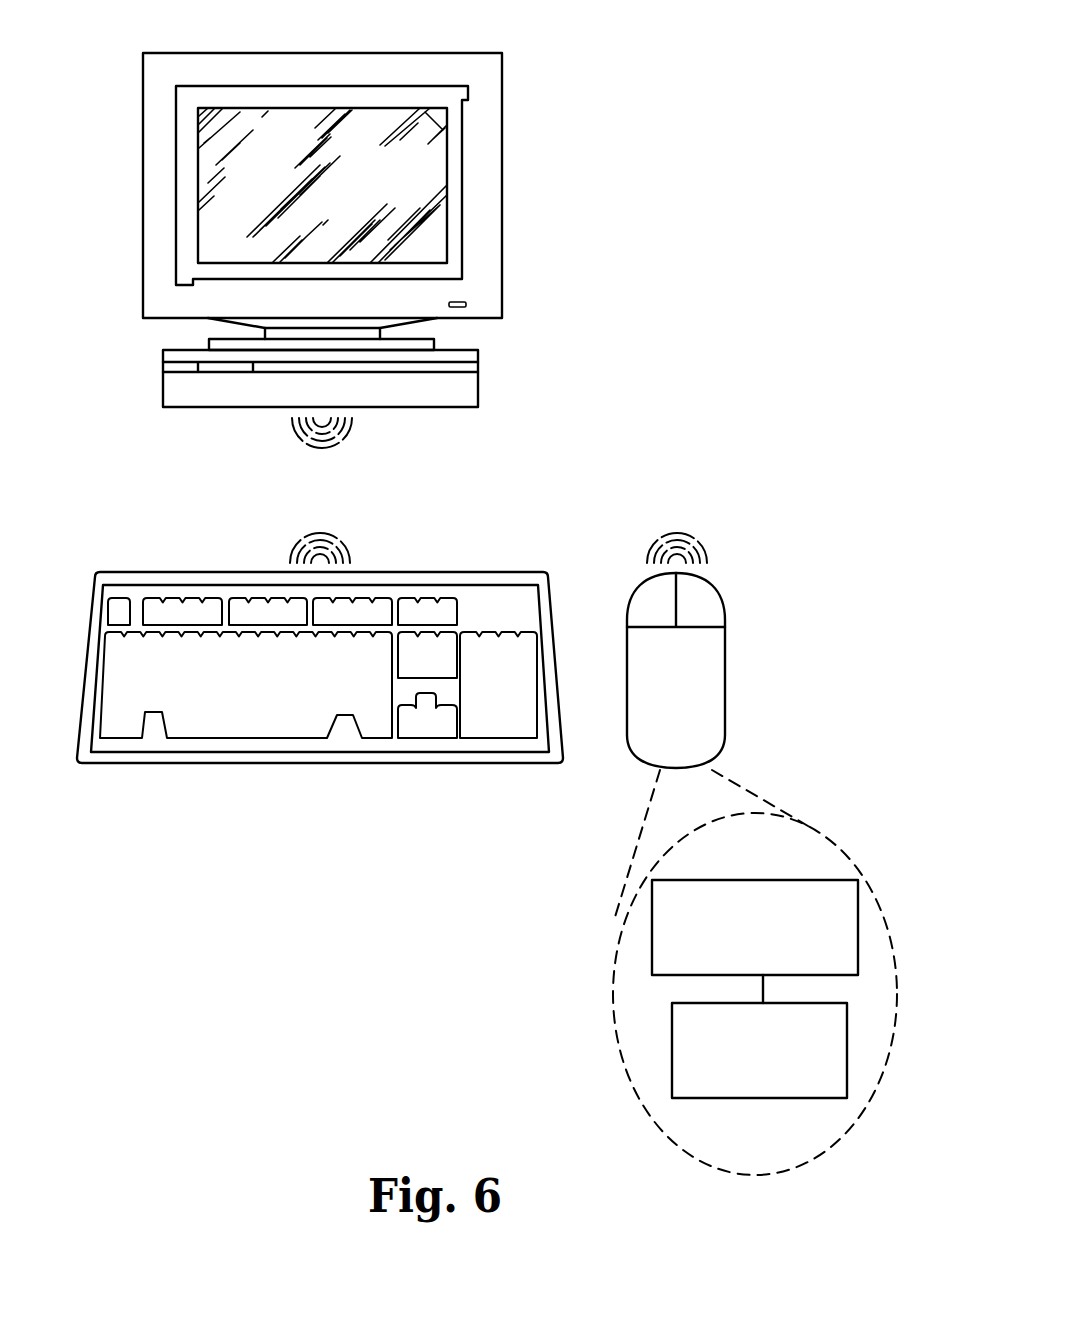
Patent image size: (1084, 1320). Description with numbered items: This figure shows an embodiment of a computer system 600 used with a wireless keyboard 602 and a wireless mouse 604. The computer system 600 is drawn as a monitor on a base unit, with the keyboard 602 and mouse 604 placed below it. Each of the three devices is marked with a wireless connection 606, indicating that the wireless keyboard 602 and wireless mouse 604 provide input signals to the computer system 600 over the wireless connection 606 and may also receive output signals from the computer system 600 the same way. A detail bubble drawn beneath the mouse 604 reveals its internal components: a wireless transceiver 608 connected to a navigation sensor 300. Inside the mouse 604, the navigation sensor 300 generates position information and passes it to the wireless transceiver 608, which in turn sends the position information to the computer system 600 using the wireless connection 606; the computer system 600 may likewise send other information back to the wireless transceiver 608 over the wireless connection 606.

The computer system 600 is at (478, 396).
The wireless keyboard 602 is at (117, 764).
The wireless mouse 604 is at (725, 670).
The wireless connection 606 is at (336, 443).
The wireless transceiver 608 is at (686, 976).
The navigation sensor 300 is at (740, 1098).